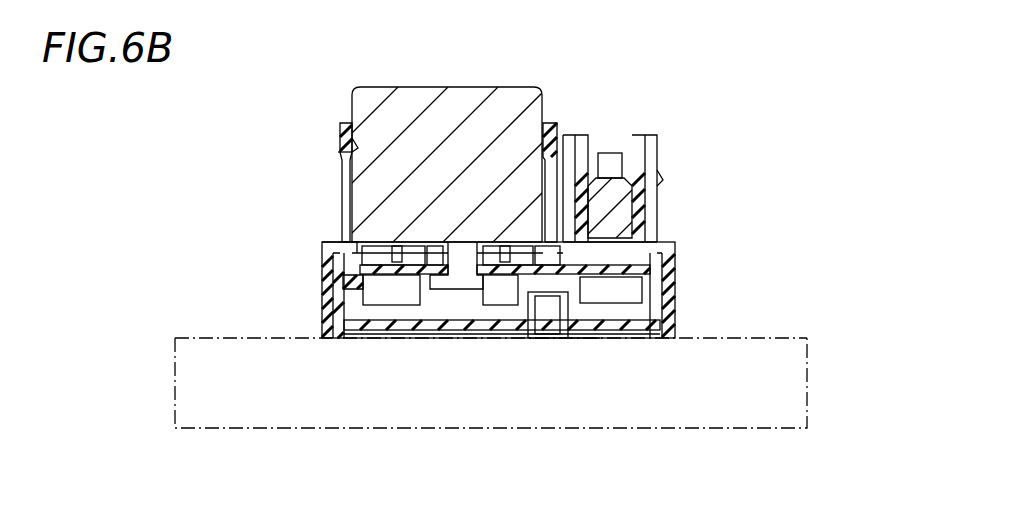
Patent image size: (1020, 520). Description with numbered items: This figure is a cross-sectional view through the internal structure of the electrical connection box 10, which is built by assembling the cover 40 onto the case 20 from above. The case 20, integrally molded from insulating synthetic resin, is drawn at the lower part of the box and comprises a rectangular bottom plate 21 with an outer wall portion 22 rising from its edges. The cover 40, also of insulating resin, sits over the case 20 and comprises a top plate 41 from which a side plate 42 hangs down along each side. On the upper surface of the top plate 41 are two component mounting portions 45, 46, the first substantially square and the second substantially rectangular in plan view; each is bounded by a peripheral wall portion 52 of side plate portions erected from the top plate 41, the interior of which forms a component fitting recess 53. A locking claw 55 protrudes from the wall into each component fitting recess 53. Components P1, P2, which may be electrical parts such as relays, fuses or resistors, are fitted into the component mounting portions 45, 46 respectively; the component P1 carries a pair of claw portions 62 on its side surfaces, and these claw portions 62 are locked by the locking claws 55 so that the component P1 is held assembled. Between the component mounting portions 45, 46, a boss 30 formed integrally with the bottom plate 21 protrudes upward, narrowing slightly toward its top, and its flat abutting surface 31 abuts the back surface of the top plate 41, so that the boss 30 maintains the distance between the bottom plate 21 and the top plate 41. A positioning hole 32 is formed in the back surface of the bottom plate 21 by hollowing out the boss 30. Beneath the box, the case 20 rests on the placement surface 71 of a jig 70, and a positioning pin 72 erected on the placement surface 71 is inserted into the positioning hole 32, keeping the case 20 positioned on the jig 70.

The electrical connection box 10 is at (266, 176).
The case 20 is at (352, 342).
The bottom plate 21 is at (438, 332).
The outer wall portion 22 is at (326, 340).
The boss 30 is at (594, 306).
The abutting surface 31 is at (560, 265).
The positioning hole 32 is at (548, 326).
The cover 40 is at (320, 242).
The top plate 41 is at (338, 287).
The side plate 42 is at (322, 268).
The component mounting portion 45 is at (338, 122).
The component mounting portion 46 is at (660, 148).
The peripheral wall portion 52 is at (346, 136).
The component fitting recess 53 is at (542, 130).
The locking claw 55 is at (612, 158).
The claw portion 62 is at (340, 157).
The jig 70 is at (812, 378).
The placement surface 71 is at (796, 336).
The positioning pin 72 is at (582, 336).
The component P1 is at (438, 84).
The component P2 is at (633, 184).